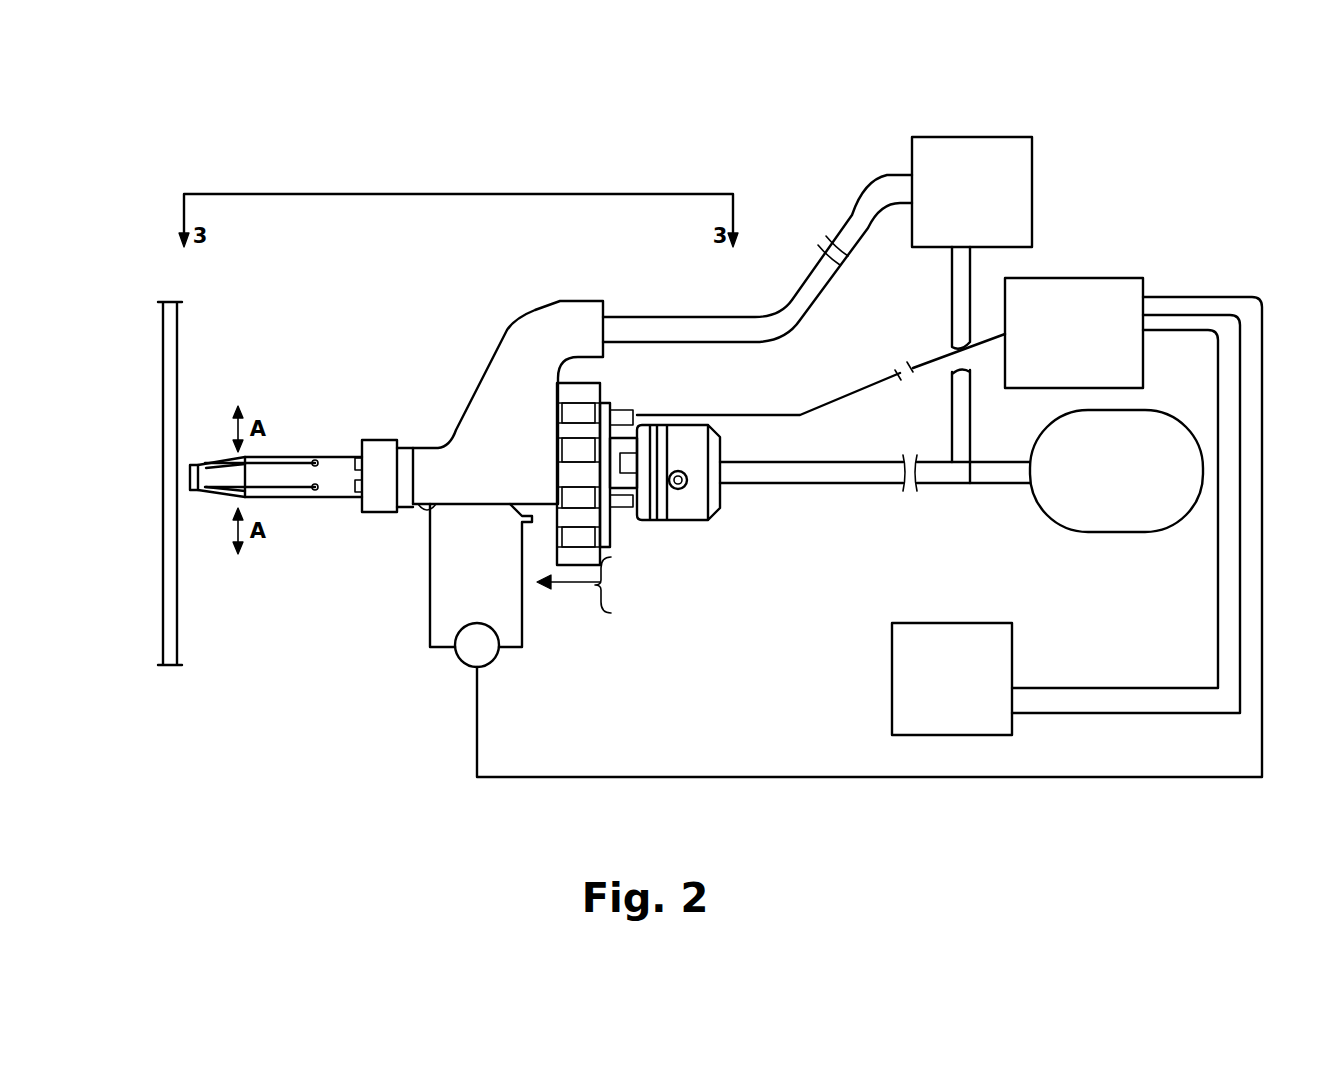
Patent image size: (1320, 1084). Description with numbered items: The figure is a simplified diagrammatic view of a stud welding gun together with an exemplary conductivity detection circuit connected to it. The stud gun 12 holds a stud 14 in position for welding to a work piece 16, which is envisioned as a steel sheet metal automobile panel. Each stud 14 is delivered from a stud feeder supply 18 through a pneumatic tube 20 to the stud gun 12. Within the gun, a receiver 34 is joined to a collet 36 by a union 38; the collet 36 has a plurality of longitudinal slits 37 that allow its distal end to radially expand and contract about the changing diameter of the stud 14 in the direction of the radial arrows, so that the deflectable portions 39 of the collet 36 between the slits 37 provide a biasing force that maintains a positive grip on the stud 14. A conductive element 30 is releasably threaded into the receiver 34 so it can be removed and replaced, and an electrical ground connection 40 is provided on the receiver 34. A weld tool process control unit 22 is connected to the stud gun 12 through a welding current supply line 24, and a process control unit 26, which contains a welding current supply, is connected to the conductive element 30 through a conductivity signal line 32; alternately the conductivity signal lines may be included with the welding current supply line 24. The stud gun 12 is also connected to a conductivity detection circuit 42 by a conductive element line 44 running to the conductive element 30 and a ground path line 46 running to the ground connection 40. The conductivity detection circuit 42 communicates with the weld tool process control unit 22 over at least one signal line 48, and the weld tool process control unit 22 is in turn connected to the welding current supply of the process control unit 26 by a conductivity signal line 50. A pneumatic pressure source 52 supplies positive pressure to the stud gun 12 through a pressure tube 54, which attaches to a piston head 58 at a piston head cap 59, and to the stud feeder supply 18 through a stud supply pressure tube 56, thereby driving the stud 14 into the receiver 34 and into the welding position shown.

The stud gun 12 is at (433, 360).
The stud 14 is at (193, 464).
The work piece 16 is at (177, 355).
The stud feeder supply 18 is at (1032, 152).
The pneumatic tube 20 is at (658, 327).
The weld tool process control unit 22 is at (1090, 276).
The welding current supply line 24 is at (770, 415).
The process control unit 26 is at (943, 623).
The conductive element 30 is at (507, 524).
The conductivity signal line 32 is at (588, 498).
The receiver 34 is at (505, 388).
The collet 36 is at (300, 473).
The longitudinal slits 37 is at (293, 488).
The union 38 is at (370, 498).
The deflectable portions 39 is at (220, 494).
The electrical ground connection 40 is at (422, 514).
The conductivity detection circuit 42 is at (460, 661).
The conductive element line 44 is at (522, 613).
The ground path line 46 is at (428, 594).
The signal line 48 is at (680, 777).
The conductivity signal line 50 is at (1073, 687).
The pneumatic pressure source 52 is at (1142, 408).
The pressure tube 54 is at (877, 467).
The stud supply pressure tube 56 is at (953, 276).
The piston head 58 is at (693, 507).
The piston head cap 59 is at (720, 493).